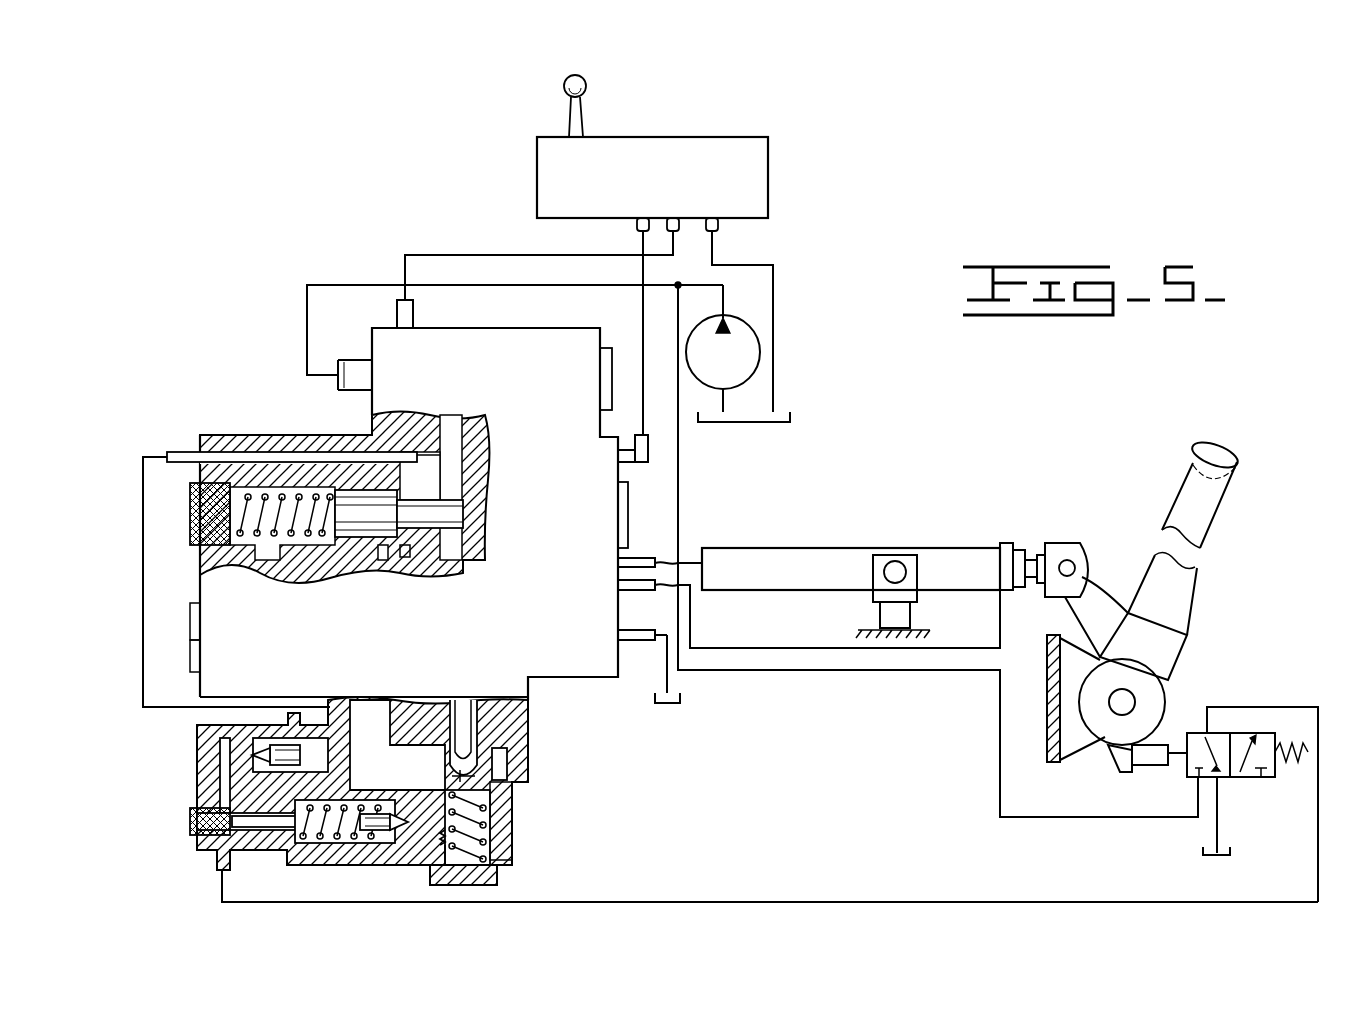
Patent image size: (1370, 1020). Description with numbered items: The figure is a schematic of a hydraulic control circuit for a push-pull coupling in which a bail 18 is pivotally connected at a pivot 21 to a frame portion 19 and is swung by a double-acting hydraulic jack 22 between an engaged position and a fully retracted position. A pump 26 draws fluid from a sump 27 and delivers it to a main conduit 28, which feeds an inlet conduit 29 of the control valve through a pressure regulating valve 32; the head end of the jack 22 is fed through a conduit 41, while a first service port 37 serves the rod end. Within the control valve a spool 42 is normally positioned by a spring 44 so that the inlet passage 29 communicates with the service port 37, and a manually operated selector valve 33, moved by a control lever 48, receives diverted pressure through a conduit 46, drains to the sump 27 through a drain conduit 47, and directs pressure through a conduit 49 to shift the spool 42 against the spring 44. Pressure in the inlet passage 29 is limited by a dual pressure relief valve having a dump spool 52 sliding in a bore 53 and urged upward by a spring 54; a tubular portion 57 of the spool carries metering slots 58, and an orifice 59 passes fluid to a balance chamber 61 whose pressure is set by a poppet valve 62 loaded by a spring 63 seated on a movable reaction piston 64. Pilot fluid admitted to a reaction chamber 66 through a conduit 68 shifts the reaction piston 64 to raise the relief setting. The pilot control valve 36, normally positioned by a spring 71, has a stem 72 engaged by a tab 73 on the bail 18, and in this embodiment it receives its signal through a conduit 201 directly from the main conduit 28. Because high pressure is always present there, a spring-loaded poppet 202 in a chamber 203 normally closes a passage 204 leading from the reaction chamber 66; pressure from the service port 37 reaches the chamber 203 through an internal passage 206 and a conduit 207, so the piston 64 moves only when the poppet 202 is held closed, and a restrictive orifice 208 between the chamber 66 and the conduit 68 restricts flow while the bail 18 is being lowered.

The bail 18 is at (1205, 528).
The frame portion 19 is at (1068, 660).
The pivotal connection 21 is at (1120, 697).
The double-acting hydraulic jack 22 is at (810, 548).
The pump 26 is at (742, 368).
The sump 27 is at (740, 424).
The main conduit 28 is at (328, 248).
The inlet conduit 29 is at (468, 480).
The pressure regulating valve 32 is at (441, 329).
The selector valve 33 is at (768, 154).
The pilot control valve 36 is at (1232, 784).
The first service port 37 is at (408, 560).
The conduit 41 is at (690, 562).
The spool 42 is at (372, 545).
The spring 44 is at (262, 560).
The conduit 46 is at (455, 255).
The drain conduit 47 is at (776, 290).
The manual control lever 48 is at (583, 115).
The conduit 49 is at (643, 316).
The dump spool 52 is at (510, 768).
The bore 53 is at (508, 805).
The spring 54 is at (496, 870).
The tubular portion 57 is at (518, 746).
The metering slots 58 is at (460, 722).
The orifice 59 is at (452, 778).
The balance chamber 61 is at (492, 828).
The poppet valve 62 is at (386, 838).
The spring 63 is at (320, 842).
The reaction piston 64 is at (240, 836).
The reaction chamber 66 is at (215, 815).
The conduit 68 is at (790, 902).
The spring 71 is at (1288, 743).
The stem 72 is at (1147, 758).
The tab 73 is at (1120, 763).
The conduit 201 is at (790, 671).
The spring-loaded poppet 202 is at (266, 758).
The chamber 203 is at (349, 745).
The passage 204 is at (222, 768).
The internal passage 206 is at (262, 452).
The conduit 207 is at (143, 575).
The restrictive orifice 208 is at (207, 850).